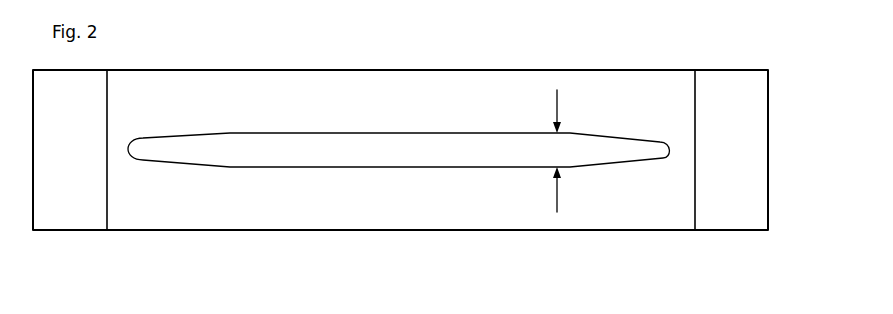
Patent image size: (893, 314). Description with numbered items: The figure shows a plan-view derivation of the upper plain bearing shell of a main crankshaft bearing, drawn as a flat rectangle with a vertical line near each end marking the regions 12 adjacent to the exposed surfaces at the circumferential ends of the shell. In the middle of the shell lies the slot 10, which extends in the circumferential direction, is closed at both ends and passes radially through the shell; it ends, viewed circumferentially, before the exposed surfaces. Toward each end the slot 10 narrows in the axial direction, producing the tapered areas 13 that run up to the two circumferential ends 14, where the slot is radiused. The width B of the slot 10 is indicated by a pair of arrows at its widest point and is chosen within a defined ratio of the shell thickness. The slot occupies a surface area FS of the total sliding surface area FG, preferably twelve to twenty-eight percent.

The slot 10 is at (425, 152).
The clamping regions of blade holder 12 is at (72, 164).
The tapered areas 13 is at (183, 135).
The circumferential ends 14 is at (130, 143).
The width of slot B is at (567, 151).
The total sliding surface area FG is at (190, 197).
The surface area of slot FS is at (277, 151).